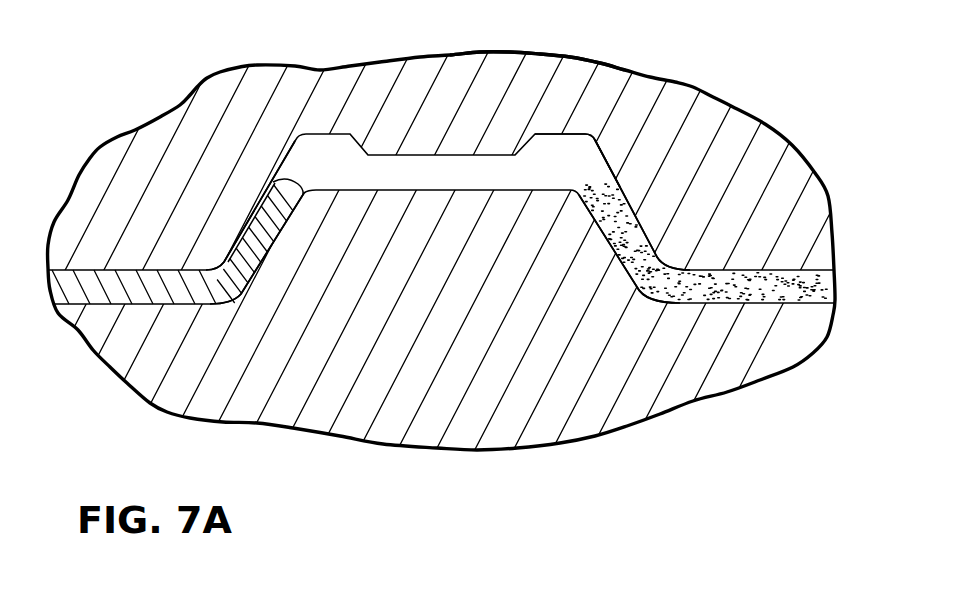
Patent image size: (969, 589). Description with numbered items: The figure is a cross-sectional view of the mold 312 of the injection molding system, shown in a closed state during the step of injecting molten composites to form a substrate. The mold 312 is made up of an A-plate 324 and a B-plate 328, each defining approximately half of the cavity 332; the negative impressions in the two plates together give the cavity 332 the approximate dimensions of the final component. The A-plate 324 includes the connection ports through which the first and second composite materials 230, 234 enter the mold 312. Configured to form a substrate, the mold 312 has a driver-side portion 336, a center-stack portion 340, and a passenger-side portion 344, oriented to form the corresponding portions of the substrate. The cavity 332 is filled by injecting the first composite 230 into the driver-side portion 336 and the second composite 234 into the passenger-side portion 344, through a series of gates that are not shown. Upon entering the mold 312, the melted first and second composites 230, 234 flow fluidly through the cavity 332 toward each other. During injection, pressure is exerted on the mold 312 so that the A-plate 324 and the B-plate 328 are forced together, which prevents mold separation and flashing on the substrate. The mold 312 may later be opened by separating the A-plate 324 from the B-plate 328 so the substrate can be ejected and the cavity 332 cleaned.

The mold 312 is at (790, 78).
The A-plate 324 is at (533, 80).
The B-plate 328 is at (528, 395).
The cavity 332 is at (541, 165).
The driver-side portion 336 is at (758, 254).
The center-stack portion 340 is at (428, 148).
The passenger-side portion 344 is at (126, 254).
The second composite material 234 is at (163, 305).
The first composite material 230 is at (767, 302).